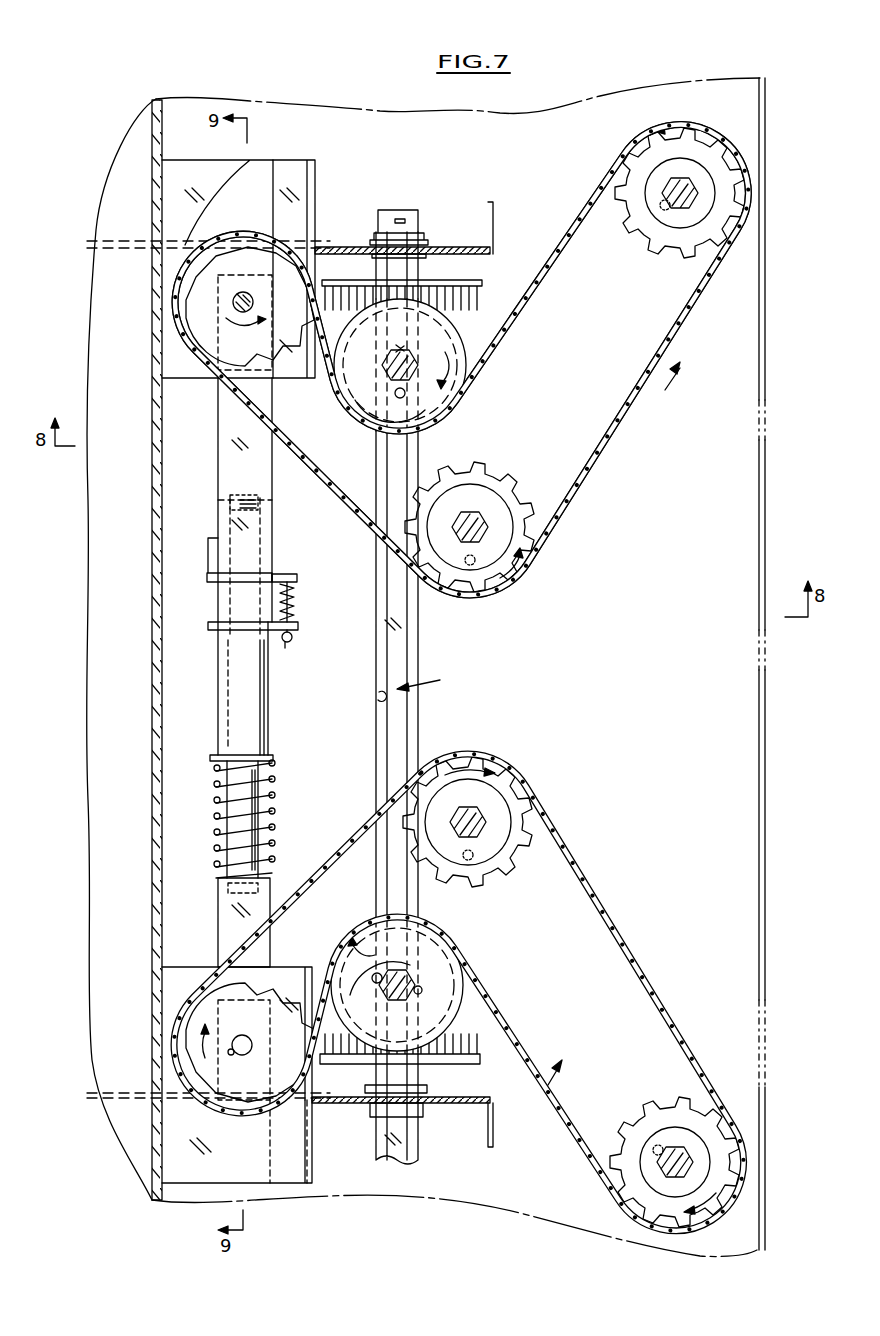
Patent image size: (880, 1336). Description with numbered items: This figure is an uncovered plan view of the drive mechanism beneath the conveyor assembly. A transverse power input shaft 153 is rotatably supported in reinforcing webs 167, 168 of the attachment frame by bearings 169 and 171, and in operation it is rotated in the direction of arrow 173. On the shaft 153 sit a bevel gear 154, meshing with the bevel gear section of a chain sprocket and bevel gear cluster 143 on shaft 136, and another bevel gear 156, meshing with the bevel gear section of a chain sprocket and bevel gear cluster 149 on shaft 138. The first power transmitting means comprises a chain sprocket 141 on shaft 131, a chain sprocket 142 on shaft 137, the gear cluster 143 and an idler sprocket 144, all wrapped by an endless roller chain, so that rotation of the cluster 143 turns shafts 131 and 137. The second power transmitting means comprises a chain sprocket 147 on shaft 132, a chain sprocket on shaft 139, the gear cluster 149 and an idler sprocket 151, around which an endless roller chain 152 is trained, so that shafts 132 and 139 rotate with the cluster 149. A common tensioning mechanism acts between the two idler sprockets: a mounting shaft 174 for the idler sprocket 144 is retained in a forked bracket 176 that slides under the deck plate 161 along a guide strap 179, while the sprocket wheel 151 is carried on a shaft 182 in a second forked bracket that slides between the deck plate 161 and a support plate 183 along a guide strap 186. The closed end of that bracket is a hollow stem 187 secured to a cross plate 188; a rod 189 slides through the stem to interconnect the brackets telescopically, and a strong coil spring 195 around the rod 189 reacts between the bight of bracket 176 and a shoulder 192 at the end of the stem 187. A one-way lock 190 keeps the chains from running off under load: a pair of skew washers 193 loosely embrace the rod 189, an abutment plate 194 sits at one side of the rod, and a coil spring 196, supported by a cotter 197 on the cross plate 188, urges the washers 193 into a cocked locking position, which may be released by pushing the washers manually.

The shaft 131 is at (480, 818).
The shaft 132 is at (480, 527).
The shaft 136 is at (410, 978).
The shaft 137 is at (660, 1167).
The shaft 138 is at (443, 345).
The shaft 139 is at (675, 205).
The chain sprocket 141 is at (487, 872).
The chain sprocket 142 is at (650, 1112).
The chain sprocket and bevel gear cluster 143 is at (458, 1005).
The idler sprocket 144 is at (190, 1033).
The chain sprocket 147 is at (498, 477).
The chain sprocket and bevel gear cluster 149 is at (487, 357).
The idler sprocket 151 is at (245, 250).
The endless roller chain 152 is at (600, 448).
The power input shaft 153 is at (420, 635).
The bevel gear 154 is at (477, 1057).
The bevel gear 156 is at (480, 298).
The deck plate 161 is at (297, 1163).
The reinforcing web 167 is at (470, 1098).
The reinforcing web 168 is at (343, 247).
The bearing 169 is at (420, 243).
The bearing 171 is at (423, 1118).
The arrow 173 is at (424, 686).
The mounting shaft 174 is at (237, 1055).
The forked bracket 176 is at (217, 903).
The guide strap 179 is at (287, 968).
The shaft 182 is at (238, 302).
The support plate 183 is at (195, 167).
The guide strap 186 is at (298, 165).
The hollow stem 187 is at (268, 705).
The cross plate 188 is at (293, 637).
The rod 189 is at (262, 498).
The one-way lock 190 is at (300, 625).
The shoulder 192 is at (275, 758).
The skew washers 193 is at (290, 578).
The abutment plate 194 is at (210, 555).
The coil spring 195 is at (272, 825).
The coil spring 196 is at (294, 600).
The cotter 197 is at (297, 656).